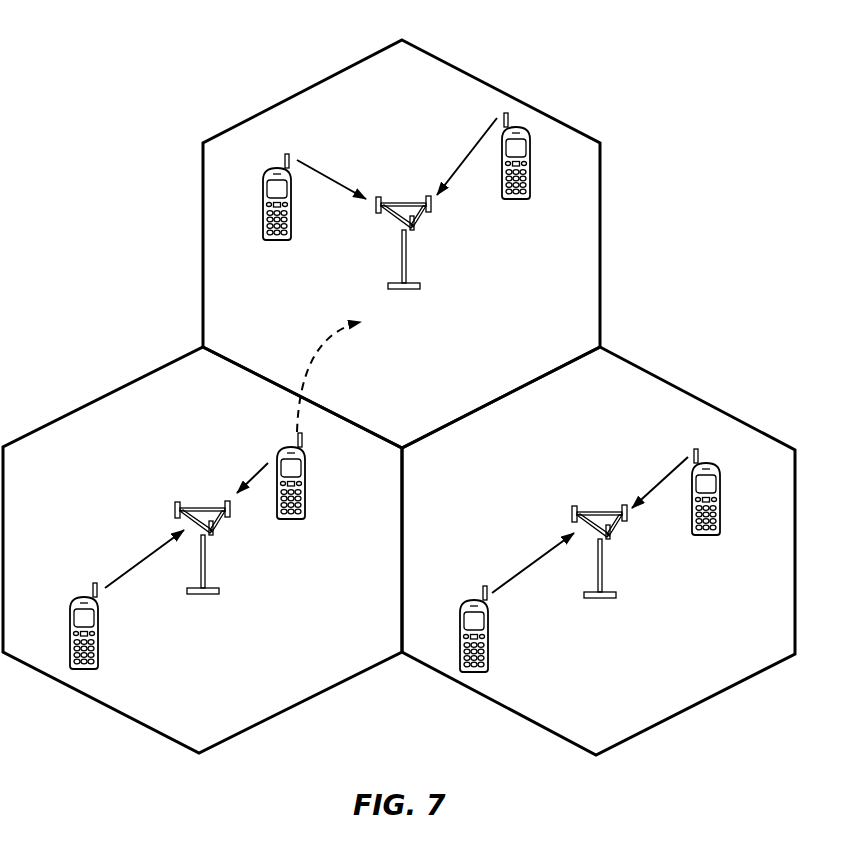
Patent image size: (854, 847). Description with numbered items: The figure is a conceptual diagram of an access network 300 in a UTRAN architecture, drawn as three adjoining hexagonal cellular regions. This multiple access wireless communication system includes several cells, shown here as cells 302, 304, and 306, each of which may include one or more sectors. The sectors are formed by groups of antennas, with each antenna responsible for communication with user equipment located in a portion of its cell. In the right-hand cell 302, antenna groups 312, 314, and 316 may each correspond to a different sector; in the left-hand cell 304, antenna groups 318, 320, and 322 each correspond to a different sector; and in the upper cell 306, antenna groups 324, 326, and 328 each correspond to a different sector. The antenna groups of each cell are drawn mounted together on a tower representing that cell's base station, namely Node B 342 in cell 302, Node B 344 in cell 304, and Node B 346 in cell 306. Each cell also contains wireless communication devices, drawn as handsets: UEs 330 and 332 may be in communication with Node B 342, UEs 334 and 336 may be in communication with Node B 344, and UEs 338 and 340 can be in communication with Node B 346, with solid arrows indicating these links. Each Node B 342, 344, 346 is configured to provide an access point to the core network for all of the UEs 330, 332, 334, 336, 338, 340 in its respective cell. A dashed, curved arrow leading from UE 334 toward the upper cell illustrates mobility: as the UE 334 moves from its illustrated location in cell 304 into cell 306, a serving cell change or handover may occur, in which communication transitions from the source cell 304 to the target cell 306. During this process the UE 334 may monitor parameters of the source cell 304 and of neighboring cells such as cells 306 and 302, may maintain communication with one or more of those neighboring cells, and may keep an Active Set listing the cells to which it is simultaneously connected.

The access network 300 is at (399, 385).
The cell 302 is at (697, 397).
The cell 304 is at (80, 405).
The cell 306 is at (485, 80).
The antenna group 312 is at (570, 507).
The antenna group 314 is at (609, 538).
The antenna group 316 is at (627, 520).
The antenna group 318 is at (211, 536).
The antenna group 320 is at (230, 518).
The antenna group 322 is at (174, 505).
The antenna group 324 is at (375, 215).
The antenna group 326 is at (414, 232).
The antenna group 328 is at (431, 214).
The UE 330 is at (720, 483).
The UE 332 is at (460, 623).
The UE 334 is at (307, 467).
The UE 336 is at (70, 621).
The UE 338 is at (276, 242).
The UE 340 is at (517, 199).
The Node B 342 is at (598, 531).
The Node B 344 is at (201, 528).
The Node B 346 is at (404, 224).